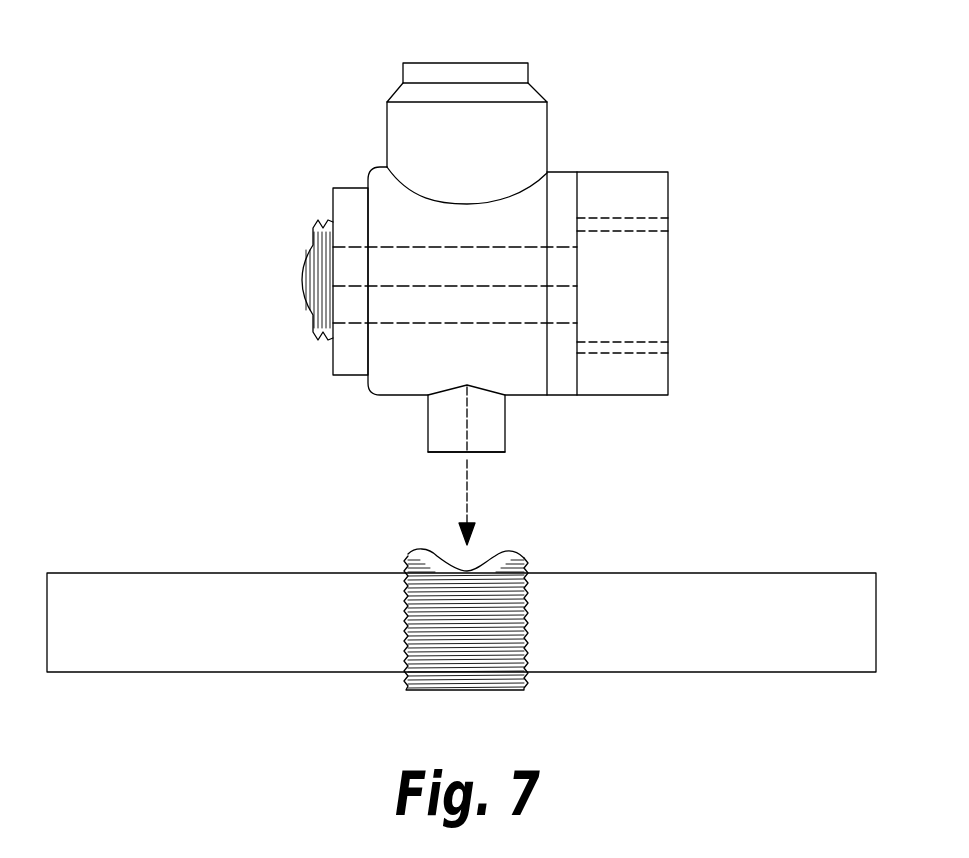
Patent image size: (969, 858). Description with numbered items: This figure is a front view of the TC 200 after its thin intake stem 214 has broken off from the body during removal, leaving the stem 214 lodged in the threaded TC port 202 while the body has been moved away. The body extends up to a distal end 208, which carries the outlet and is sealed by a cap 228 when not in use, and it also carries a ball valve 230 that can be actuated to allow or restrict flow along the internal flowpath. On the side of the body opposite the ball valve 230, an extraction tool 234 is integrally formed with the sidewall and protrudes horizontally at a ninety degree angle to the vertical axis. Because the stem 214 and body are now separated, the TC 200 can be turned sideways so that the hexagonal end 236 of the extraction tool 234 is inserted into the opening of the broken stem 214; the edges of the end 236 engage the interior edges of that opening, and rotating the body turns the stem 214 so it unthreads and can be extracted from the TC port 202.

The TC 200 is at (345, 140).
The ball valve 230 is at (447, 128).
The distal end 208 is at (498, 246).
The cap 228 is at (642, 231).
The extraction tool 234 is at (443, 430).
The end 236 is at (483, 452).
The stem 214 is at (498, 613).
The TC port 202 is at (715, 597).